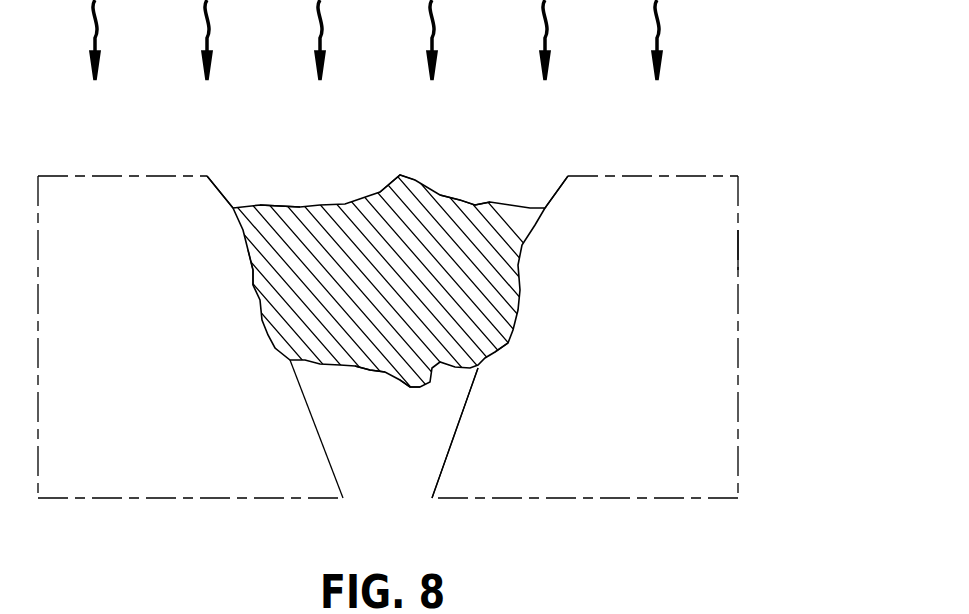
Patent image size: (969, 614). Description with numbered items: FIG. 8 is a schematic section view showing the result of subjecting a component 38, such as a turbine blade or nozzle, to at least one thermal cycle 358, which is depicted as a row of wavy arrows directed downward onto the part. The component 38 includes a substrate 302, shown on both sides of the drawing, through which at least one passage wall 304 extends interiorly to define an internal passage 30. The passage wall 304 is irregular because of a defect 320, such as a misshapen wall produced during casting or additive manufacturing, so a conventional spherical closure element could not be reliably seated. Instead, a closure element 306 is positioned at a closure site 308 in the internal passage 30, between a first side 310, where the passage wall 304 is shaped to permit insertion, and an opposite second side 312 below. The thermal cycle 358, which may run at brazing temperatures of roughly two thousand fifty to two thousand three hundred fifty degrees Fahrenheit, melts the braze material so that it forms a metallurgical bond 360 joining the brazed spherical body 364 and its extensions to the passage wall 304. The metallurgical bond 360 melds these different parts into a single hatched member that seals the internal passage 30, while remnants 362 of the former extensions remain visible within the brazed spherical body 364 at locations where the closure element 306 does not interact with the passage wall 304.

The internal passage 30 is at (303, 145).
The component 38 is at (724, 250).
The substrate 302 is at (140, 362).
The passage wall 304 is at (547, 207).
The closure element 306 is at (368, 253).
The closure site 308 is at (246, 315).
The first side 310 is at (250, 180).
The second side 312 is at (365, 492).
The defect 320 is at (462, 385).
The thermal cycle 358 is at (657, 25).
The metallurgical bond 360 is at (370, 378).
The remnants 362 is at (403, 178).
The brazed spherical body 364 is at (478, 236).